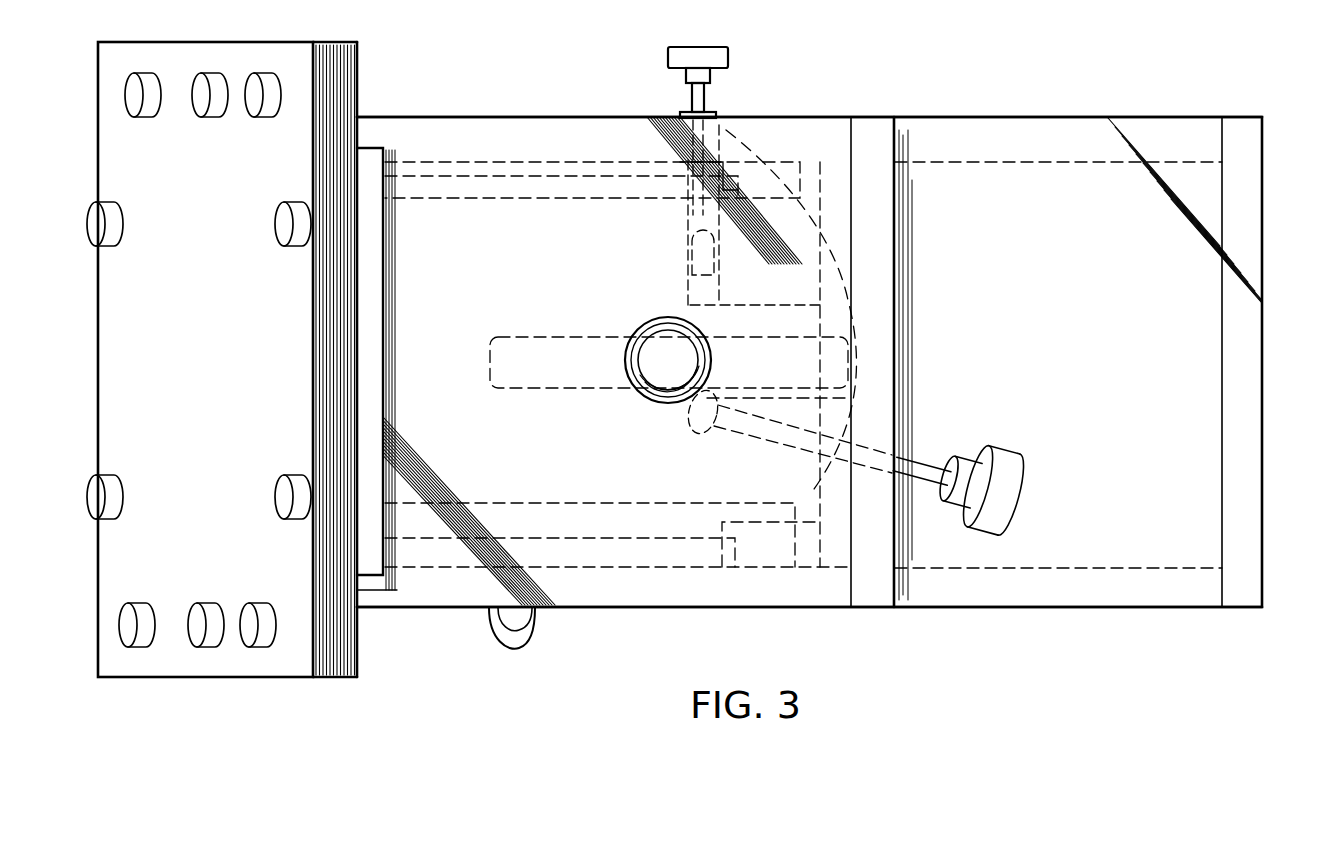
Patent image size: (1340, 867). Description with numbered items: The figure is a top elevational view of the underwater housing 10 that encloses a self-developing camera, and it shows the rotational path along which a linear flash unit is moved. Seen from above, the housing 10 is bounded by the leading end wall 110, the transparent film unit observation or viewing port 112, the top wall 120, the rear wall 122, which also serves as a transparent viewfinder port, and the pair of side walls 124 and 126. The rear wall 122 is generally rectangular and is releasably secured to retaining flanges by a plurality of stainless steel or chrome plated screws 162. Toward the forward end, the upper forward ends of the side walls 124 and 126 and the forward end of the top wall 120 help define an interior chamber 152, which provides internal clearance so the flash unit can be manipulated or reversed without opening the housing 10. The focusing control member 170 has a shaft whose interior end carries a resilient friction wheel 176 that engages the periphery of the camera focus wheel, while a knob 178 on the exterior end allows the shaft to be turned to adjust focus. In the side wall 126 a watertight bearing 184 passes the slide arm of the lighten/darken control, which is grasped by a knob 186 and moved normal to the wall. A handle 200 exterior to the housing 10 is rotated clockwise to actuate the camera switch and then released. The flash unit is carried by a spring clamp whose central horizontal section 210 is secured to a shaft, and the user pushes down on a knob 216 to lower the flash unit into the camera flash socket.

The underwater housing 10 is at (912, 97).
The leading end wall 110 is at (1262, 322).
The film unit observation or viewing port 112 is at (1085, 303).
The top wall 120 is at (557, 243).
The rear wall 122 is at (120, 333).
The side wall 124 is at (695, 608).
The side wall 126 is at (790, 117).
The interior chamber 152 is at (840, 303).
The screws 162 is at (97, 225).
The focusing control member 170 is at (920, 465).
The friction wheel 176 is at (705, 432).
The knob 178 is at (1008, 475).
The watertight bearing 184 is at (724, 190).
The knob 186 is at (710, 57).
The handle 200 is at (530, 634).
The central horizontal section 210 is at (535, 350).
The knob 216 is at (659, 338).